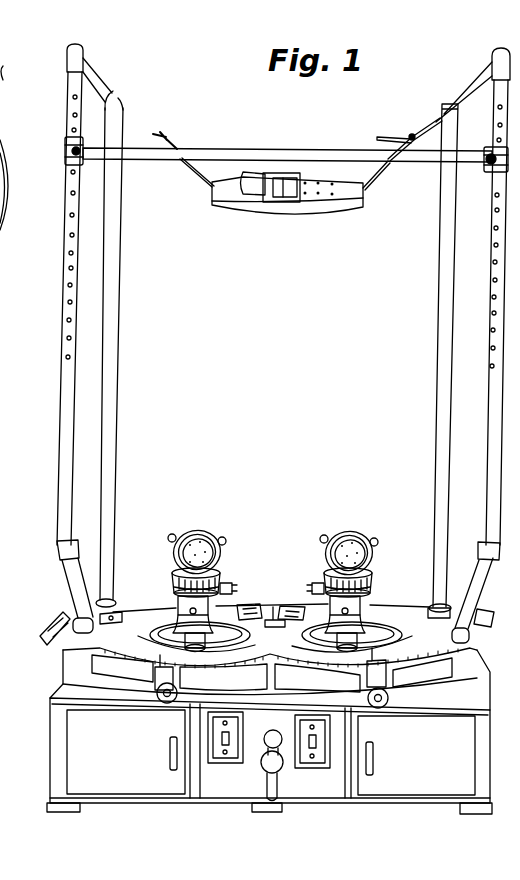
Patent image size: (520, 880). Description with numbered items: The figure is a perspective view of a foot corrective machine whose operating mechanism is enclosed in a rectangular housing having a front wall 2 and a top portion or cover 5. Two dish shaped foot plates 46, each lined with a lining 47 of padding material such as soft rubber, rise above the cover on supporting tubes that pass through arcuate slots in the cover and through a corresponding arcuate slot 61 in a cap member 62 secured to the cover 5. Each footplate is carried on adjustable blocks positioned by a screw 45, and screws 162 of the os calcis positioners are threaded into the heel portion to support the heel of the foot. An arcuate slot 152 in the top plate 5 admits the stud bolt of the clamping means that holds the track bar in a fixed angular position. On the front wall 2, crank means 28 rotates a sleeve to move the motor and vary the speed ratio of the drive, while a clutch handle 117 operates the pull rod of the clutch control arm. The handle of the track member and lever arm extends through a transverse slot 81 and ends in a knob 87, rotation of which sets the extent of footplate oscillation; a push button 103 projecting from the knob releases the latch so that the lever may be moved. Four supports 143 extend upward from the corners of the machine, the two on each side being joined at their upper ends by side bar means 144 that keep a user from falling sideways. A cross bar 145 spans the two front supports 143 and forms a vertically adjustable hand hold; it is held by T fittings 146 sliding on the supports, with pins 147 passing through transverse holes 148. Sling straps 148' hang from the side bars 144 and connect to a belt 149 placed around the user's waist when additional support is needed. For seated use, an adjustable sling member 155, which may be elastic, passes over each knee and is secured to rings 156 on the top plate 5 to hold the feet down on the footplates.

The front wall 2 is at (72, 744).
The top portion or cover 5 is at (96, 643).
The crank means 28 is at (265, 773).
The screw 45 is at (314, 586).
The dish shaped foot plate 46 is at (322, 573).
The lining of padding material 47 is at (219, 538).
The arcuate slot 61 is at (160, 631).
The cap member 62 is at (240, 634).
The transverse slot 81 is at (121, 673).
The knob 87 is at (166, 704).
The push button 103 is at (160, 706).
The clutch handle 117 is at (170, 758).
The supports 143 is at (128, 432).
The side bar means 144 is at (103, 92).
The cross bar 145 is at (309, 153).
The T fittings 146 is at (84, 163).
The pins 147 is at (81, 145).
The transverse holes 148 is at (284, 231).
The sling straps 148' is at (297, 124).
The belt 149 is at (312, 218).
The arcuate slot 152 is at (142, 650).
The adjustable sling member 155 is at (64, 626).
The rings 156 is at (124, 612).
The screws 162 is at (320, 541).